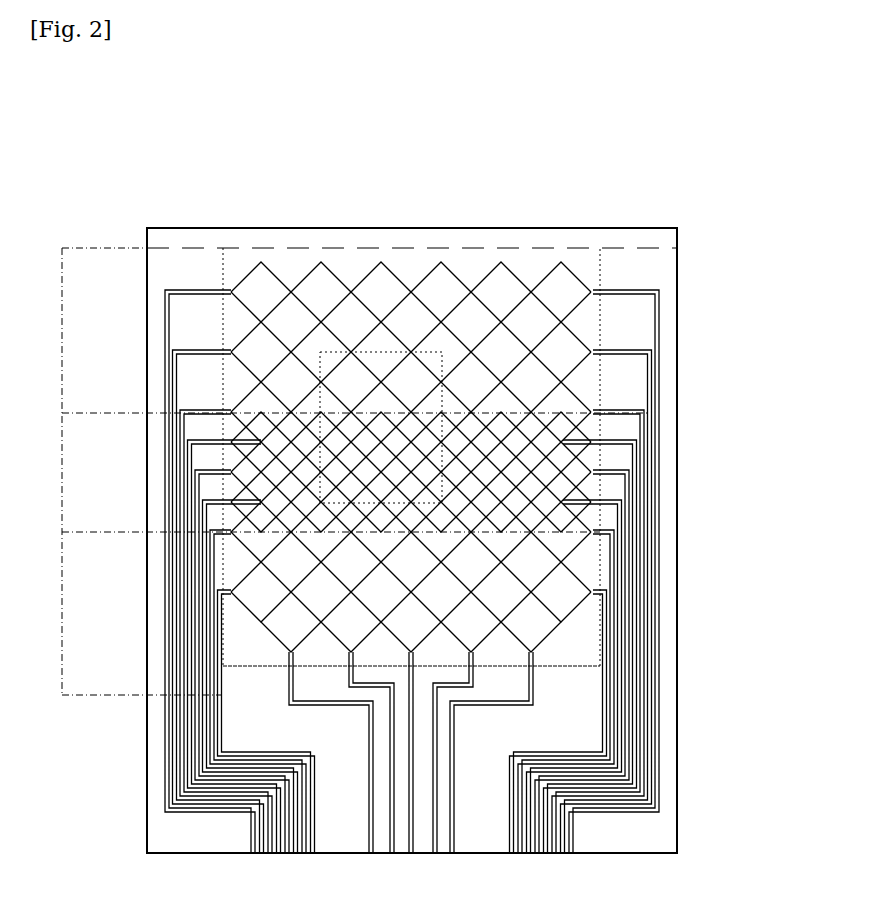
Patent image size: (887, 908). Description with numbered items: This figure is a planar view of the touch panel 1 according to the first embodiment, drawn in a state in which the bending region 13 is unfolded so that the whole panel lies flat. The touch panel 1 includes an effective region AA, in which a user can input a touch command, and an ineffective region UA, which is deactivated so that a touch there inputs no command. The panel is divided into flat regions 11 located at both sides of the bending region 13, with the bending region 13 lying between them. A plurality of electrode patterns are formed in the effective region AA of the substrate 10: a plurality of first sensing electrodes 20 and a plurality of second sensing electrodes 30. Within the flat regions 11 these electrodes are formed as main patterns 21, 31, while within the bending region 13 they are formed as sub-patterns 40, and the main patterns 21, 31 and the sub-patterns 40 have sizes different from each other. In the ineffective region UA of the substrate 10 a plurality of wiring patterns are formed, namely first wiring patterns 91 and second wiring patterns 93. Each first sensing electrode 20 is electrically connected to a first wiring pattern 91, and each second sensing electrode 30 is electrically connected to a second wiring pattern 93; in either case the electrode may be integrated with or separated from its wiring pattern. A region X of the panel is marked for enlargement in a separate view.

The touch panel 1 is at (431, 90).
The substrate 10 is at (671, 229).
The flat regions 11 is at (341, 471).
The bending region 13 is at (316, 499).
The first sensing electrodes 20 is at (585, 267).
The main patterns 21 is at (575, 303).
The second sensing electrodes 30 is at (257, 322).
The main patterns 31 is at (310, 284).
The sub-patterns 40 is at (589, 481).
The first wiring patterns 91 is at (660, 535).
The second wiring patterns 93 is at (537, 692).
The region X is at (397, 280).
The effective region AA is at (470, 272).
The ineffective region UA is at (660, 262).